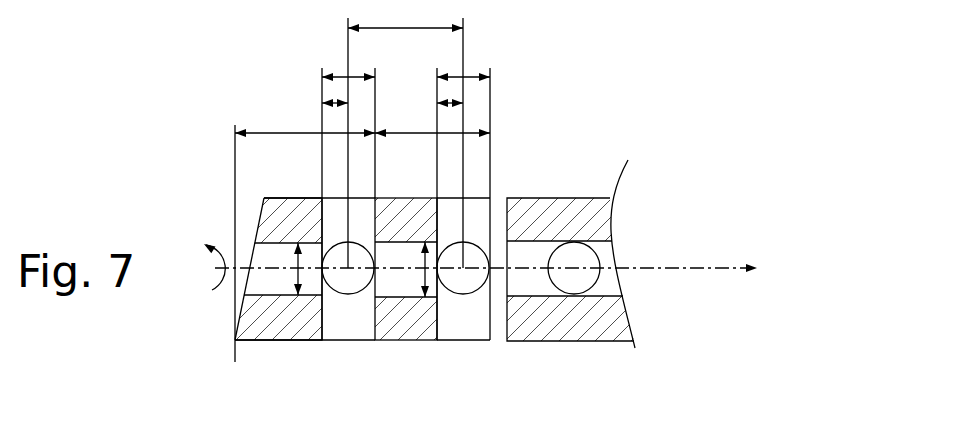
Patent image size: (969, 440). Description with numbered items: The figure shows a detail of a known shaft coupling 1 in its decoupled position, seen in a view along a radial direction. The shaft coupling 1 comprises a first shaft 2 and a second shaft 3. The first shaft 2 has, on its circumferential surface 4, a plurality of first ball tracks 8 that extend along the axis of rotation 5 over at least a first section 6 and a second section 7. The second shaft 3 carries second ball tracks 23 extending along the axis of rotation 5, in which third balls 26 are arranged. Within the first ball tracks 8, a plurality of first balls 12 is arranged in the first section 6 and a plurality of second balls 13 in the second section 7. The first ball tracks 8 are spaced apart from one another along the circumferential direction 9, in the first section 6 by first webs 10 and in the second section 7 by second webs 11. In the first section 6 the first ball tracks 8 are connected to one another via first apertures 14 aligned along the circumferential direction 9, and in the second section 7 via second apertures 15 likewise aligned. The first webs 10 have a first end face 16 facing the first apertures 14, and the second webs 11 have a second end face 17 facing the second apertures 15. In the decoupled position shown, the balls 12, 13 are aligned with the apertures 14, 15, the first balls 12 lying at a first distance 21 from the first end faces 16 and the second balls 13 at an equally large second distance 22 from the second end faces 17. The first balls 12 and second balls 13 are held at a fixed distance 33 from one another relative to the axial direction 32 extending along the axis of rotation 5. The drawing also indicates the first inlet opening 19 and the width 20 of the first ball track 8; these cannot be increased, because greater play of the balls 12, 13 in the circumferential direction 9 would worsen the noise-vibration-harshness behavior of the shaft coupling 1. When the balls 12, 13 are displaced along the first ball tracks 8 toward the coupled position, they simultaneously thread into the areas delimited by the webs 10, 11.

The shaft coupling 1 is at (600, 92).
The first shaft 2 is at (240, 194).
The second shaft 3 is at (566, 203).
The circumferential surface 4 is at (256, 224).
The axis of rotation 5 is at (265, 272).
The first section 6 is at (432, 120).
The second section 7 is at (305, 232).
The first ball track 8 is at (283, 299).
The circumferential direction 9 is at (470, 267).
The first web 10 is at (410, 223).
The second web 11 is at (273, 220).
The first ball 12 is at (457, 287).
The second ball 13 is at (297, 300).
The first aperture 14 is at (467, 121).
The second aperture 15 is at (350, 121).
The first end face 16 is at (440, 213).
The second end face 17 is at (325, 230).
The first inlet opening 19 is at (432, 254).
The width 20 is at (298, 272).
The first distance 21 is at (448, 103).
The second distance 22 is at (334, 103).
The second ball track 23 is at (612, 280).
The third ball 26 is at (578, 263).
The axial direction 32 is at (763, 282).
The fixed distance 33 is at (405, 134).